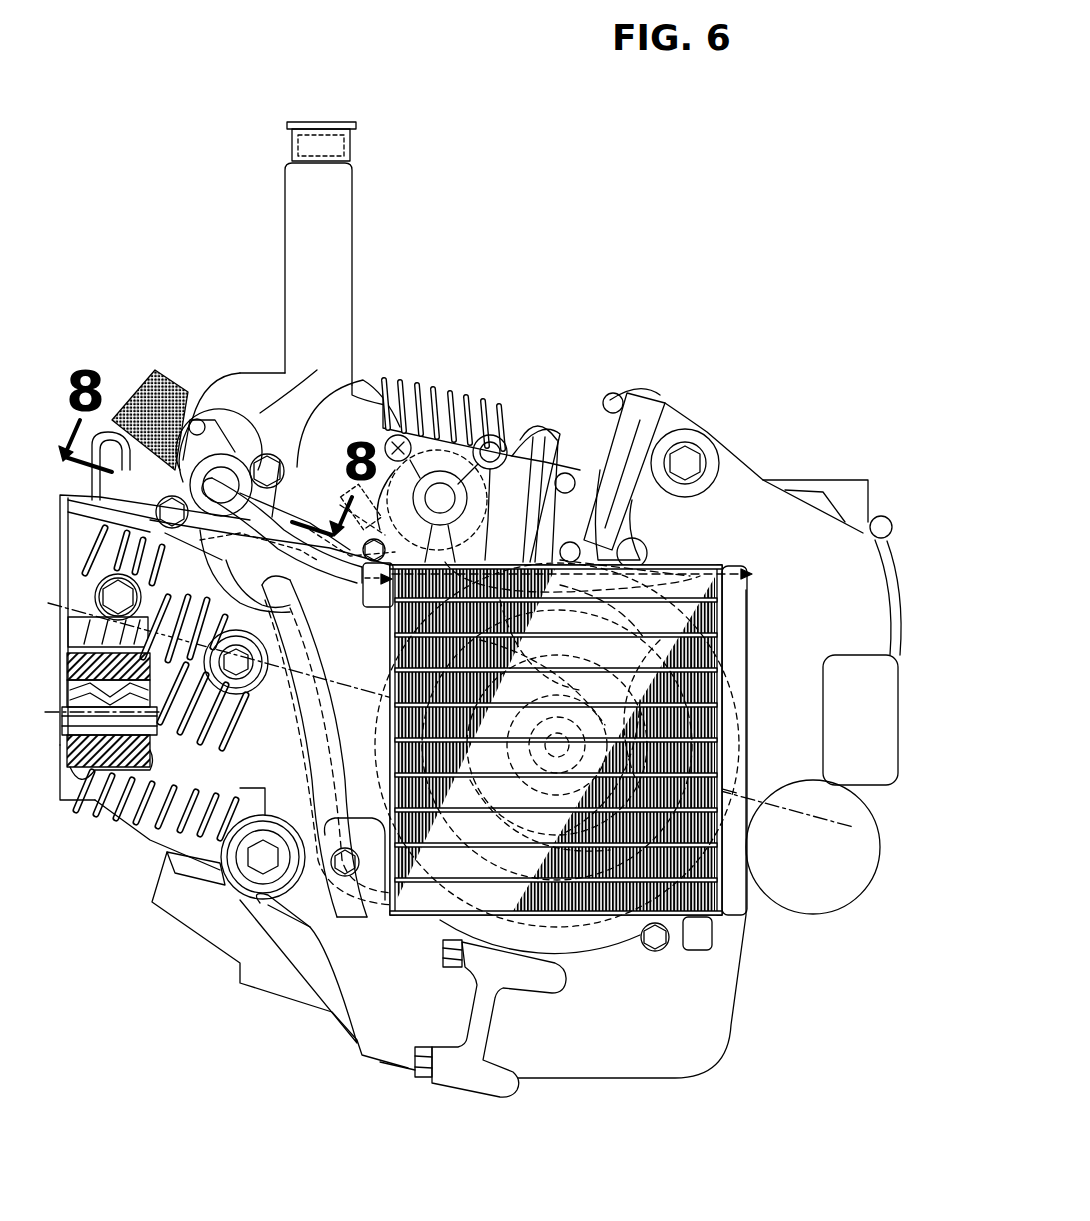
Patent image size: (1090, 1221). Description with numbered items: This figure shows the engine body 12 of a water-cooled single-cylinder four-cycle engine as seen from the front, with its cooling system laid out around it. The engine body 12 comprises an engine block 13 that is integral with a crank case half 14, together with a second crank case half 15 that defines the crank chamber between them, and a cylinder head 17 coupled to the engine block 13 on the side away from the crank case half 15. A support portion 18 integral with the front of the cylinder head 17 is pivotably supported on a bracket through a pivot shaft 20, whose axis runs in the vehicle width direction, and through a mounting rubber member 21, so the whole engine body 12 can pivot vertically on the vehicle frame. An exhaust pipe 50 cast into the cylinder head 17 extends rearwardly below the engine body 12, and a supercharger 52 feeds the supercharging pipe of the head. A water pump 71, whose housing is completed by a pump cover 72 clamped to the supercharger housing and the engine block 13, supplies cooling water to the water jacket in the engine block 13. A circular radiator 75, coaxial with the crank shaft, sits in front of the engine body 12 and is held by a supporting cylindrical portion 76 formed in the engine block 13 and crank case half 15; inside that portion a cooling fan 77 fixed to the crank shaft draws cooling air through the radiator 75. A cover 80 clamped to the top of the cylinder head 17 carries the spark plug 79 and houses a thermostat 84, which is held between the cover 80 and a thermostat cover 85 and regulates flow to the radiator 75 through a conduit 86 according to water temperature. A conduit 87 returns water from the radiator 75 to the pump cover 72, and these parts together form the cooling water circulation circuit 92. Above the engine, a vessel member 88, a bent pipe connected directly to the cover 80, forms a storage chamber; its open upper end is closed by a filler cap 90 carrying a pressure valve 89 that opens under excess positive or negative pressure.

The engine body 12 is at (370, 1064).
The engine block 13 is at (287, 938).
The crank case half 14 is at (596, 455).
The crank case half 15 is at (737, 482).
The cylinder head 17 is at (195, 825).
The support portion 18 is at (95, 785).
The pivot shaft 20 is at (160, 795).
The mounting rubber member 21 is at (155, 666).
The exhaust pipe 50 is at (268, 670).
The supercharger 52 is at (423, 372).
The water pump 71 is at (458, 442).
The pump cover 72 is at (527, 455).
The radiator 75 is at (583, 928).
The supporting cylindrical portion 76 is at (757, 755).
The cooling fan 77 is at (688, 570).
The spark plug 79 is at (296, 691).
The cover 80 is at (243, 440).
The thermostat 84 is at (272, 443).
The thermostat cover 85 is at (215, 450).
The conduit 86 is at (297, 510).
The conduit 87 is at (333, 902).
The vessel member 88 is at (340, 218).
The pressure valve 89 is at (356, 140).
The filler cap 90 is at (297, 121).
The cooling water circulation circuit 92 is at (756, 613).